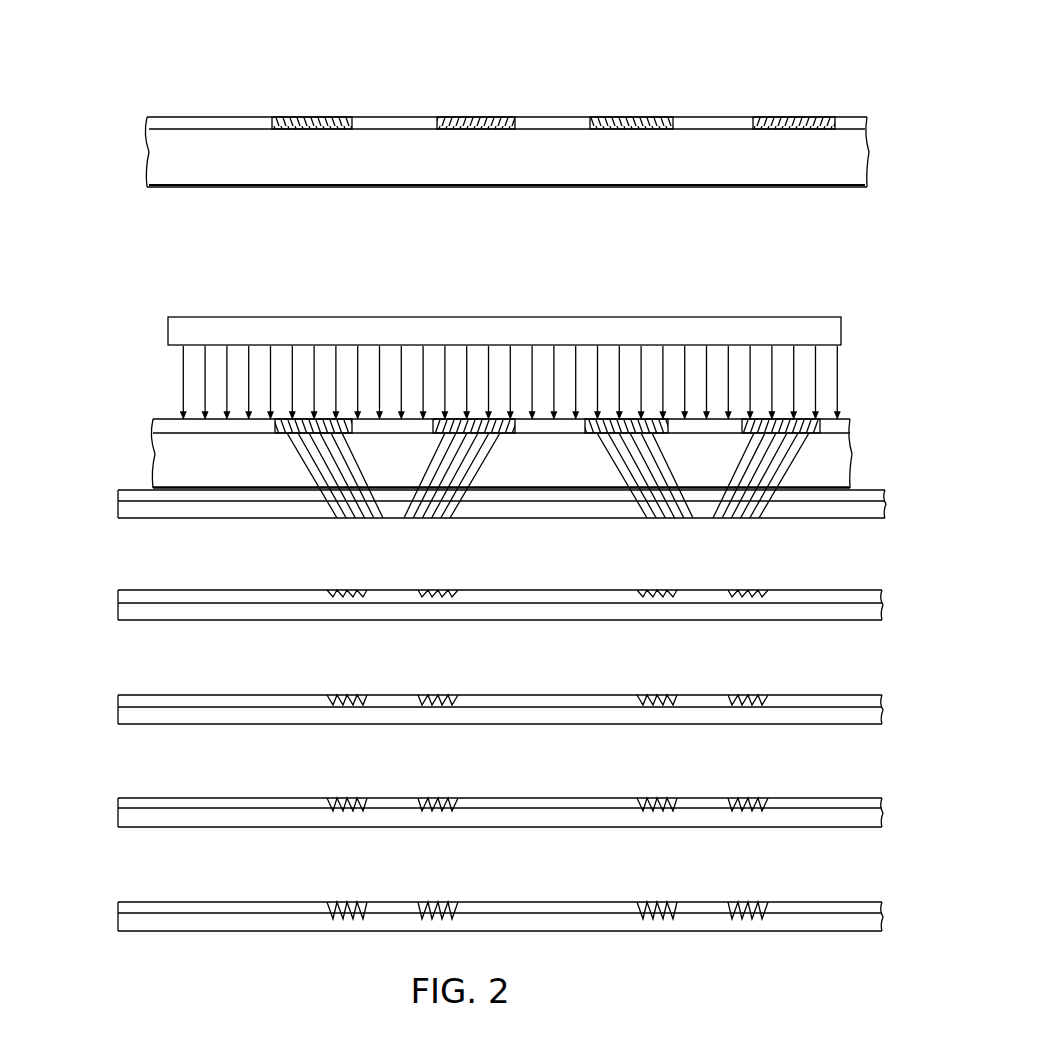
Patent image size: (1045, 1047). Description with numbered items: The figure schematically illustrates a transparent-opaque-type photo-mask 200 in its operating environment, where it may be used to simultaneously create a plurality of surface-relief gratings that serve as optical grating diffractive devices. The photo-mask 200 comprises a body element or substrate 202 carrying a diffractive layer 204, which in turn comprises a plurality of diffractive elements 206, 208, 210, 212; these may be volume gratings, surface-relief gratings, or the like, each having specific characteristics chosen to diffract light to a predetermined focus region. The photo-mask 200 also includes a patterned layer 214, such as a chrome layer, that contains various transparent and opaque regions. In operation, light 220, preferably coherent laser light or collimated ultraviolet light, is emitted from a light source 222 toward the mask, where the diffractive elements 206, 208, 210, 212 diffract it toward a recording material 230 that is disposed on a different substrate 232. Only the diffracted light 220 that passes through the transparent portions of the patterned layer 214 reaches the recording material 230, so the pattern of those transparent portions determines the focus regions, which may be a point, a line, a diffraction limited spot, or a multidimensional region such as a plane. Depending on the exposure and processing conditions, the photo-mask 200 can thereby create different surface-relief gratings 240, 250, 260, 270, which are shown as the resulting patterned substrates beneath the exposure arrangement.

The photo-mask 200 is at (708, 62).
The substrate 202 is at (145, 152).
The diffractive layer 204 is at (205, 117).
The diffractive element 206 is at (297, 117).
The diffractive element 208 is at (472, 117).
The diffractive element 210 is at (610, 117).
The diffractive element 212 is at (785, 117).
The patterned layer 214 is at (240, 188).
The light 220 is at (868, 352).
The light source 222 is at (167, 333).
The recording material 230 is at (132, 485).
The substrate 232 is at (878, 510).
The surface-relief grating 240 is at (100, 602).
The surface-relief grating 250 is at (100, 708).
The surface-relief grating 260 is at (105, 810).
The surface-relief grating 270 is at (105, 910).